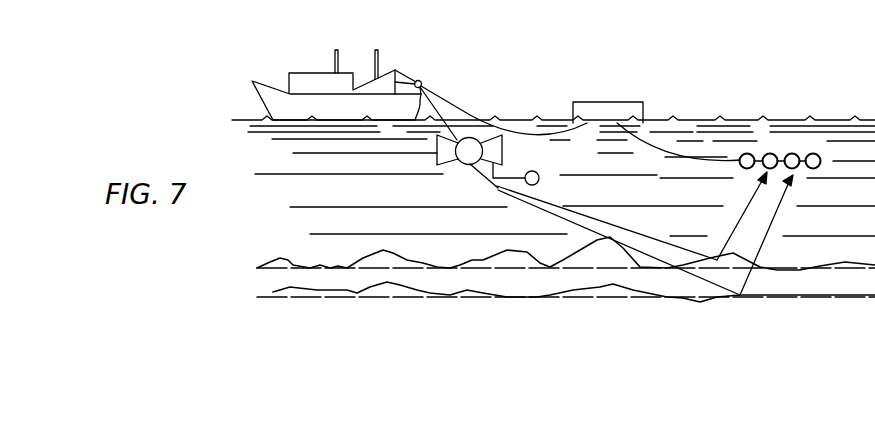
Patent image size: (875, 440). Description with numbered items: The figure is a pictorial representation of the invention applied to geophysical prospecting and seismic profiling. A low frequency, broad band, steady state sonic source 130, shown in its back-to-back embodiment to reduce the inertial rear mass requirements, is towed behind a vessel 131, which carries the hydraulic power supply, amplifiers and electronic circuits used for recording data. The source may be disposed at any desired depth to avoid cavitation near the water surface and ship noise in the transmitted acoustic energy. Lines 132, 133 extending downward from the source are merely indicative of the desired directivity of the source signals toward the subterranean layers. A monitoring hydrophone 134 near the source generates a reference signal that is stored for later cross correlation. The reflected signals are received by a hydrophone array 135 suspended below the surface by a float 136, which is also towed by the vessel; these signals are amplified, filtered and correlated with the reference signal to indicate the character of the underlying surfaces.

The source 130 is at (467, 160).
The vessel 131 is at (300, 83).
The line 132 is at (645, 236).
The line 133 is at (640, 251).
The monitoring hydrophone 134 is at (539, 180).
The hydrophone array 135 is at (820, 163).
The float 136 is at (614, 103).